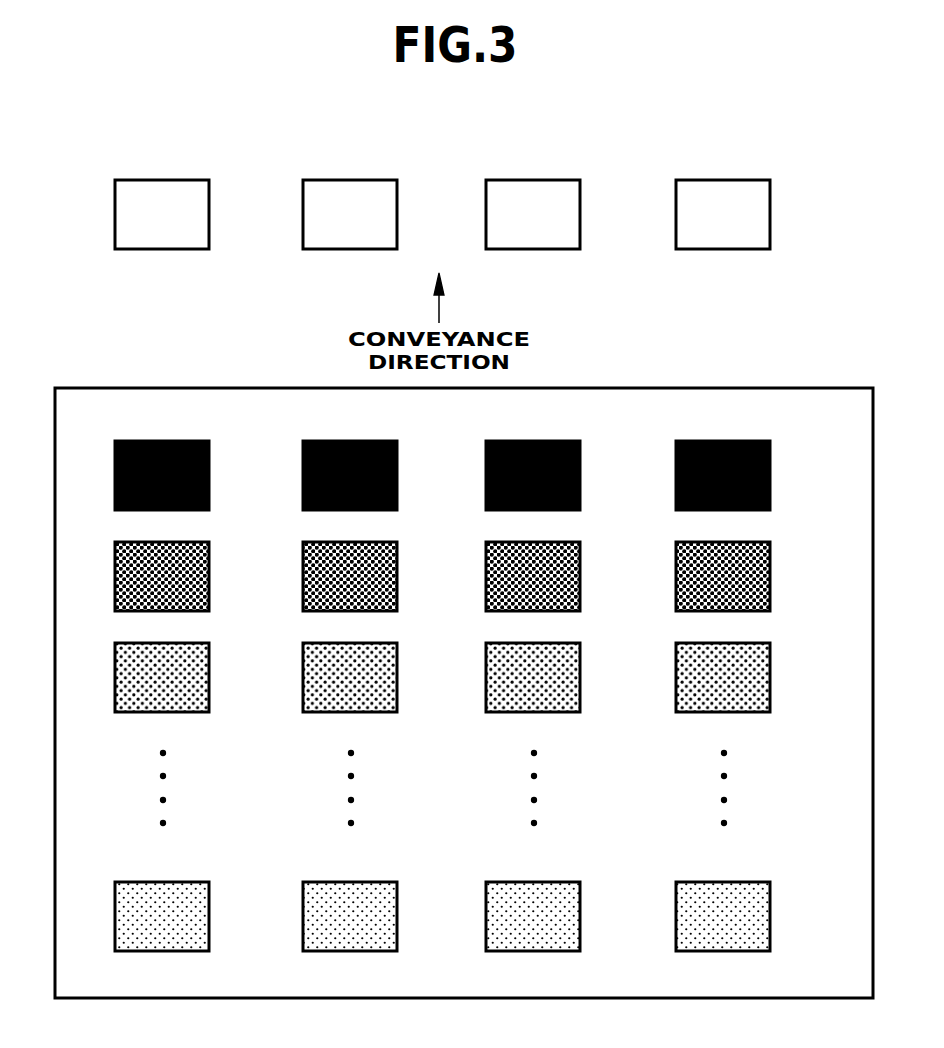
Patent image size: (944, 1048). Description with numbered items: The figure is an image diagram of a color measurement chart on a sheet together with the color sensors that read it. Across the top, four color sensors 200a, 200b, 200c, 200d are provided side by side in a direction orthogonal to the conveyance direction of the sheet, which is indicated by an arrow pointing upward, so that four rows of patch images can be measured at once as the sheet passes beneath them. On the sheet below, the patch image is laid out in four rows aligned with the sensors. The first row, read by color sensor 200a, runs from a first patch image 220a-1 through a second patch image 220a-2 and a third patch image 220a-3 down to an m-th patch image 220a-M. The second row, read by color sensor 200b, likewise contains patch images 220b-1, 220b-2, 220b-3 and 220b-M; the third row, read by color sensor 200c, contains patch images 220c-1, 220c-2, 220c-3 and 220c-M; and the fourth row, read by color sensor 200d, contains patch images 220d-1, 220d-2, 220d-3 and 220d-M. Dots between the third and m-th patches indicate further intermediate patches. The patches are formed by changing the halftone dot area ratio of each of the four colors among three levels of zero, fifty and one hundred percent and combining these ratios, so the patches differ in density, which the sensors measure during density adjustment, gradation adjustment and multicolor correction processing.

The color sensor 200a is at (164, 180).
The color sensor 200b is at (352, 180).
The color sensor 200c is at (535, 180).
The color sensor 200d is at (725, 180).
The first patch image 220a-1 is at (143, 441).
The second patch image 220a-2 is at (143, 542).
The third patch image 220a-3 is at (143, 643).
The m-th patch image 220a-M is at (143, 882).
The first patch image 220b-1 is at (331, 441).
The second patch image 220b-2 is at (331, 542).
The third patch image 220b-3 is at (331, 643).
The m-th patch image 220b-M is at (331, 882).
The first patch image 220c-1 is at (514, 441).
The second patch image 220c-2 is at (514, 542).
The third patch image 220c-3 is at (514, 643).
The m-th patch image 220c-M is at (514, 882).
The first patch image 220d-1 is at (704, 441).
The second patch image 220d-2 is at (704, 542).
The third patch image 220d-3 is at (704, 643).
The m-th patch image 220d-M is at (704, 882).